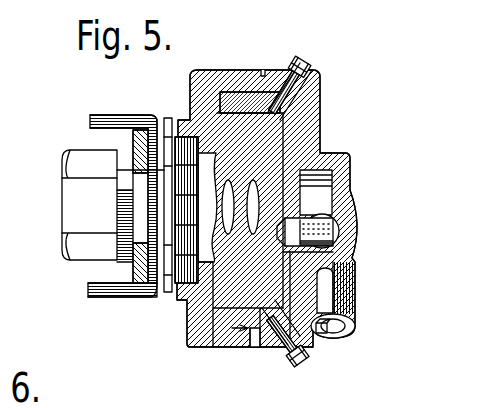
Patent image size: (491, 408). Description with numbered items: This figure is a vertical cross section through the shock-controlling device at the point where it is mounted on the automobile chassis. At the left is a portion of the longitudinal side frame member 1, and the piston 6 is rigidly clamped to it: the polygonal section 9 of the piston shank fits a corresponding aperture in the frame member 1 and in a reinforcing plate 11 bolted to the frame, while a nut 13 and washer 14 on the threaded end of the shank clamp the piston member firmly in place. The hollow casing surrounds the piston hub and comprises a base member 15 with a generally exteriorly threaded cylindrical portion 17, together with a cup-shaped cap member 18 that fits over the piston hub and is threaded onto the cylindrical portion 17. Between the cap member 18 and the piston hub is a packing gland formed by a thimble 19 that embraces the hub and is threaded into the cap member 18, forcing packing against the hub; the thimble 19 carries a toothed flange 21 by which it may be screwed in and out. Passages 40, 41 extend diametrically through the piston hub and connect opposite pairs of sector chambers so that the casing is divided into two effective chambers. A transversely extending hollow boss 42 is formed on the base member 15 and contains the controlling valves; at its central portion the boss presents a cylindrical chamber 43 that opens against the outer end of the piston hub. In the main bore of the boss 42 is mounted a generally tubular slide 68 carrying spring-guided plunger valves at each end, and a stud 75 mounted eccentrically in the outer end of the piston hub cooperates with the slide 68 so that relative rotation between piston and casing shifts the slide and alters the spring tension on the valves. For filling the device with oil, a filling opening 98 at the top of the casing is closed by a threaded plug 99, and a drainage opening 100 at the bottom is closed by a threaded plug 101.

The frame member 1 is at (148, 117).
The piston 6 is at (259, 70).
The polygonal section 9 is at (146, 221).
The reinforcing plate 11 is at (145, 283).
The nut 13 is at (72, 192).
The washer 14 is at (132, 146).
The base member 15 is at (312, 103).
The cylindrical portion 17 is at (231, 318).
The cap member 18 is at (196, 330).
The thimble 19 is at (178, 286).
The toothed flange 21 is at (169, 118).
The passage 40 is at (257, 197).
The passage 41 is at (307, 140).
The hollow boss 42 is at (348, 172).
The cylindrical chamber 43 is at (322, 197).
The slide 68 is at (355, 228).
The stud 75 is at (357, 252).
The filling opening 98 is at (300, 96).
The threaded plug 99 is at (305, 62).
The drainage opening 100 is at (270, 355).
The threaded plug 101 is at (308, 355).